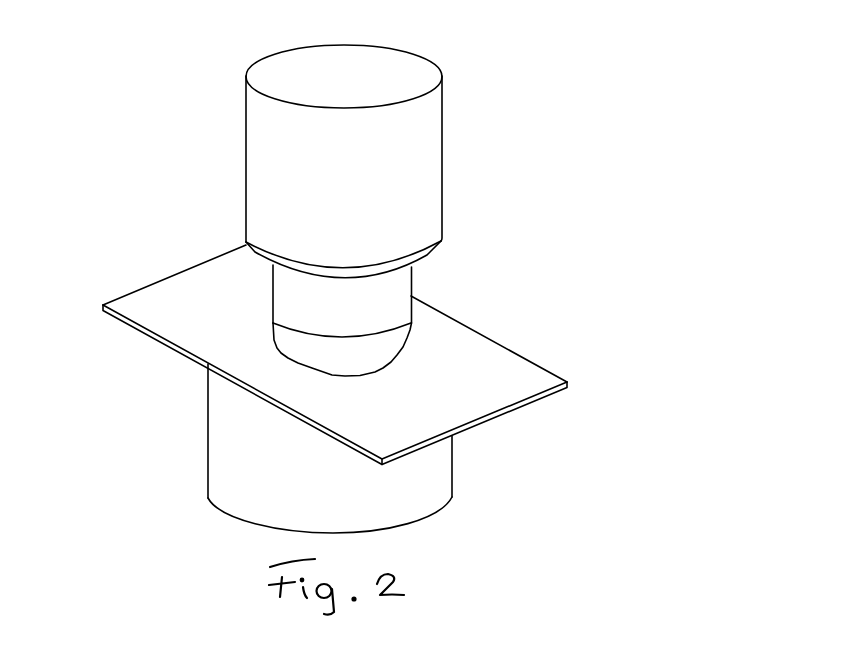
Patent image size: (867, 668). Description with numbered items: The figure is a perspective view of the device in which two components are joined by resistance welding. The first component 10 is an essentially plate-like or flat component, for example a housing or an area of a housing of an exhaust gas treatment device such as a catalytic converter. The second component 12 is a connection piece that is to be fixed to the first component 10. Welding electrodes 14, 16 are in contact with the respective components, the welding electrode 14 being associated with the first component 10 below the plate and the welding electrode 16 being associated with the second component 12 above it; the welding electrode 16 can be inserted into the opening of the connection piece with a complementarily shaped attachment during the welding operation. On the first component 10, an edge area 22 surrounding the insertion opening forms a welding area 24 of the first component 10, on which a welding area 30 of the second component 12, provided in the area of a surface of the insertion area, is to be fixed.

The first component 10 is at (542, 367).
The second component 12 is at (404, 294).
The welding electrode 14 is at (207, 458).
The welding electrode 16 is at (447, 102).
The edge area 22 is at (277, 343).
The welding area 24 is at (405, 360).
The welding area 30 is at (168, 555).